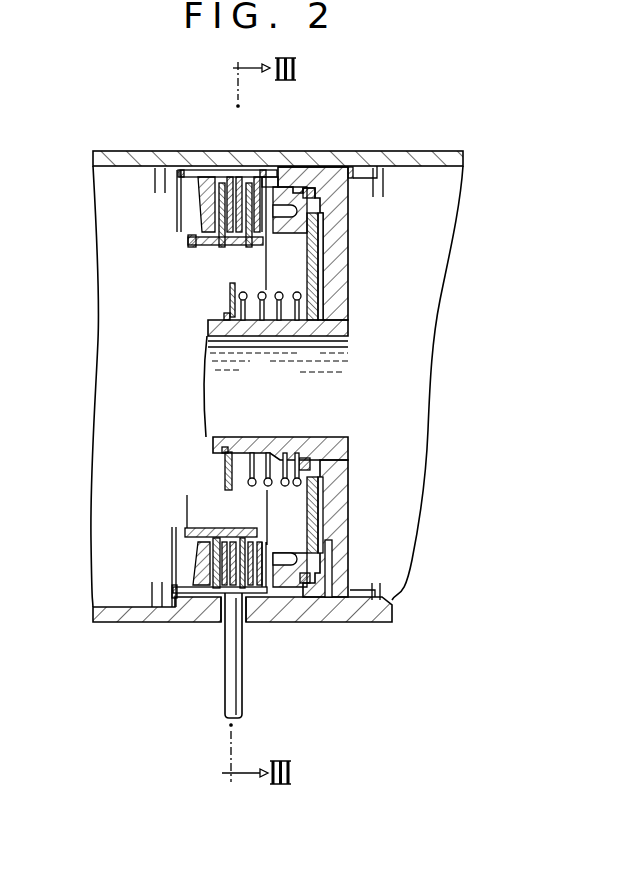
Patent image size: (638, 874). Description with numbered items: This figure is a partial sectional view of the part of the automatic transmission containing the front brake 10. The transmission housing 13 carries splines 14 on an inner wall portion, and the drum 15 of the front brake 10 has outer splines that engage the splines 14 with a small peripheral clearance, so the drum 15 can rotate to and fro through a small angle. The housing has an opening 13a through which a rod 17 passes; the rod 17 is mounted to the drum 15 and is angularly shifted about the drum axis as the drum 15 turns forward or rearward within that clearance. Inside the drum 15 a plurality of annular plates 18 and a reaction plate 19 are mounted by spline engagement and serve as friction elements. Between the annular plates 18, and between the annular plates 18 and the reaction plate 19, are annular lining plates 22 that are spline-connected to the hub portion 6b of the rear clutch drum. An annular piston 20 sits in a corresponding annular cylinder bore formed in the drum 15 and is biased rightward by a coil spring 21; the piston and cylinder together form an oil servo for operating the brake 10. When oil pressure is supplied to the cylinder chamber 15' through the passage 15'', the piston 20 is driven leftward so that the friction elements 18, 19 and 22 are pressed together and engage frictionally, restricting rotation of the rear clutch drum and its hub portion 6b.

The front brake 10 is at (310, 165).
The transmission housing 13 is at (417, 163).
The opening 13a is at (243, 623).
The splines 14 is at (364, 172).
The drum 15 is at (340, 382).
The cylinder chamber 15' is at (358, 383).
The passage 15'' is at (339, 600).
The rod 17 is at (227, 668).
The annular plates 18 is at (242, 177).
The reaction plate 19 is at (200, 177).
The annular piston 20 is at (315, 268).
The coil spring 21 is at (267, 288).
The annular lining plates 22 is at (223, 183).
The hub portion 6b is at (190, 240).